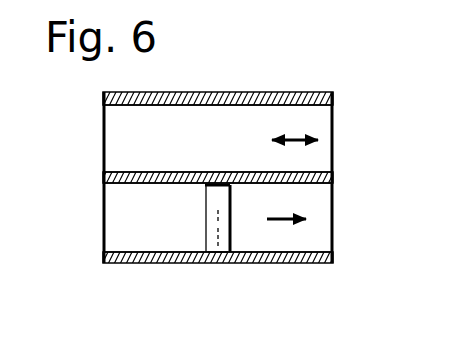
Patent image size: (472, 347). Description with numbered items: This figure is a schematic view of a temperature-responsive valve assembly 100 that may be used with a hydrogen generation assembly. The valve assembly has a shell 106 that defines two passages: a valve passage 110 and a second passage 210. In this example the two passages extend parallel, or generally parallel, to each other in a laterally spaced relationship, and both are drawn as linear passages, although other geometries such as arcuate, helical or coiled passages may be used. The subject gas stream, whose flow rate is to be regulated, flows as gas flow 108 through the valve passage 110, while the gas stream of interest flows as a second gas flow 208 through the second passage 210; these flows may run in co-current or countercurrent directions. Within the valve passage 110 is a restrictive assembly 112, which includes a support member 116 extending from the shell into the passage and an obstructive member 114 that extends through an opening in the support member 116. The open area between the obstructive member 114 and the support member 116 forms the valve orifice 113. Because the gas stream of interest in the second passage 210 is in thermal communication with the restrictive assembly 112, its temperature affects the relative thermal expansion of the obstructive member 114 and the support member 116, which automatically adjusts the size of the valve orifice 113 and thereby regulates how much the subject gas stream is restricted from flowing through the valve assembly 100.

The temperature-responsive valve assembly 100 is at (373, 44).
The shell 106 is at (258, 90).
The second gas flow 208 is at (289, 133).
The second passage 210 is at (316, 154).
The gas flow 108 is at (297, 213).
The valve passage 110 is at (317, 227).
The restrictive assembly 112 is at (220, 255).
The valve orifice 113 is at (218, 217).
The obstructive member 114 is at (218, 242).
The support member 116 is at (231, 228).